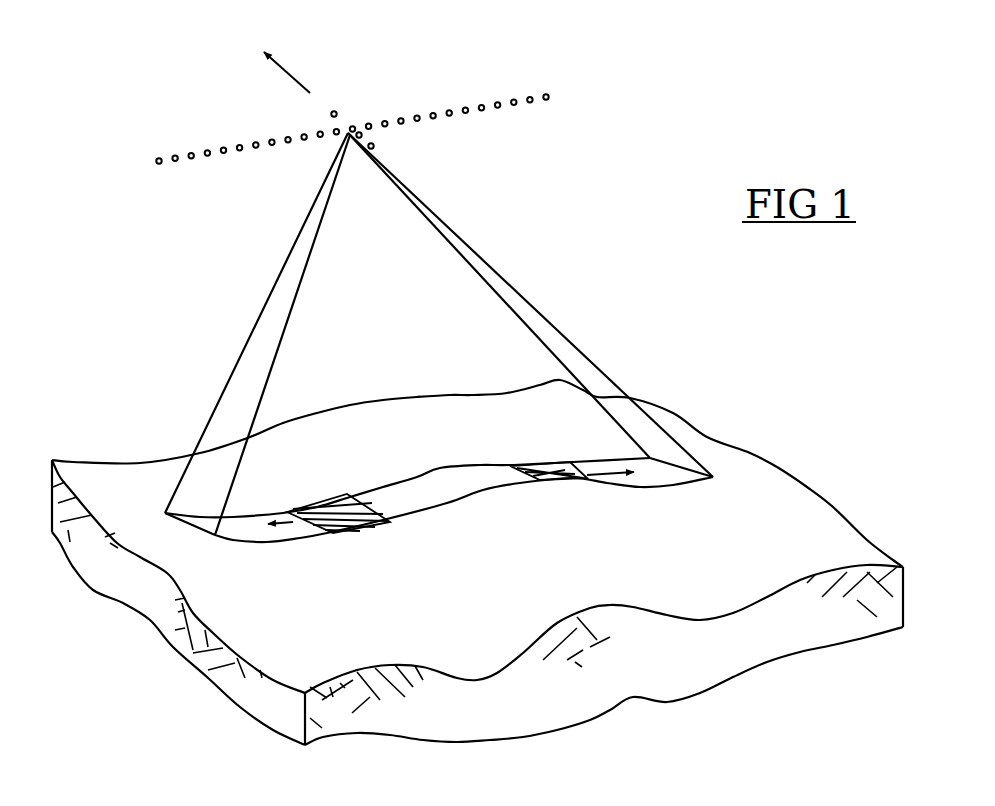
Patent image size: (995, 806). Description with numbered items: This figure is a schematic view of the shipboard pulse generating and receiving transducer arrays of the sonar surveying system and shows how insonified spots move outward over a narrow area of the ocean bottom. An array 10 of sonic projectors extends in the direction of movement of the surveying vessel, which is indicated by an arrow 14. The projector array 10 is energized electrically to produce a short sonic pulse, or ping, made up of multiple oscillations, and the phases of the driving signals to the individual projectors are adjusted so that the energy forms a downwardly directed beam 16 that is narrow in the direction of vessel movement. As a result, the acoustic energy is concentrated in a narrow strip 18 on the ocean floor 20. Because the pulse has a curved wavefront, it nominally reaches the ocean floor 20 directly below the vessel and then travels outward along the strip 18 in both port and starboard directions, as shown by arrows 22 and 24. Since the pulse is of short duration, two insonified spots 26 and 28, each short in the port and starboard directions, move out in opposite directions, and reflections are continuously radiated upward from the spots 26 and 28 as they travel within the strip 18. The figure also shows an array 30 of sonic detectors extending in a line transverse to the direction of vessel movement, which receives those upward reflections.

The array of sonic projectors 10 is at (334, 95).
The arrow 14 is at (273, 60).
The downwardly directed beam 16 is at (512, 268).
The narrow strip 18 is at (445, 503).
The ocean floor 20 is at (520, 583).
The arrow 22 is at (293, 523).
The arrow 24 is at (610, 473).
The insonified spot 26 is at (313, 505).
The insonified spot 28 is at (537, 463).
The array of sonic detectors 30 is at (576, 91).